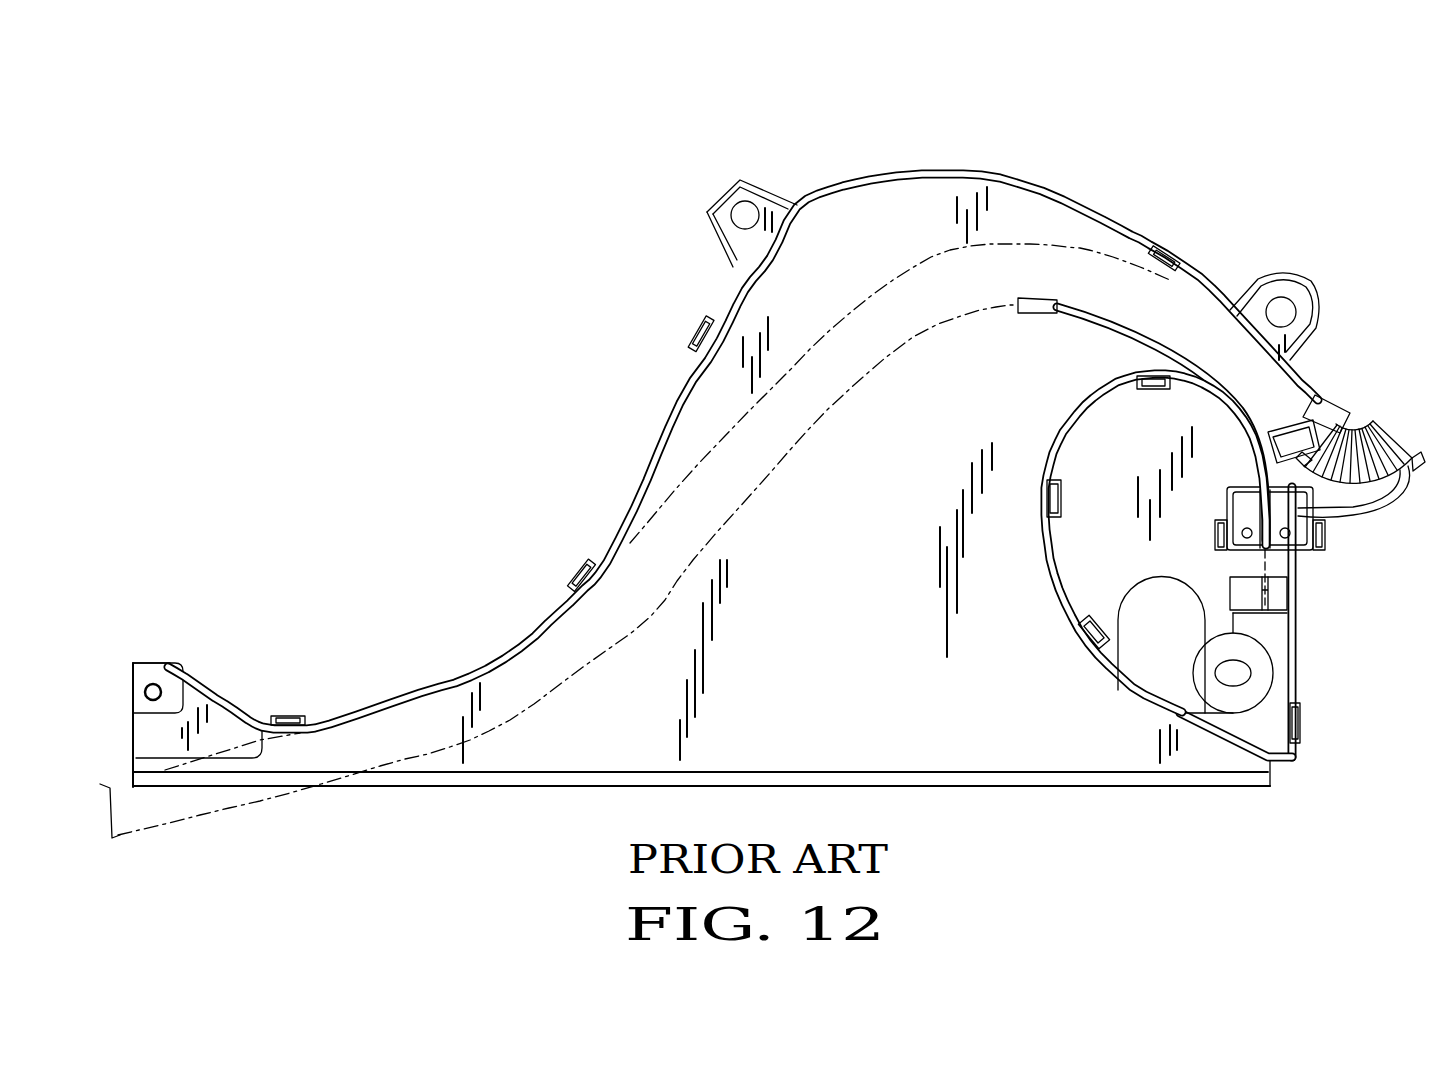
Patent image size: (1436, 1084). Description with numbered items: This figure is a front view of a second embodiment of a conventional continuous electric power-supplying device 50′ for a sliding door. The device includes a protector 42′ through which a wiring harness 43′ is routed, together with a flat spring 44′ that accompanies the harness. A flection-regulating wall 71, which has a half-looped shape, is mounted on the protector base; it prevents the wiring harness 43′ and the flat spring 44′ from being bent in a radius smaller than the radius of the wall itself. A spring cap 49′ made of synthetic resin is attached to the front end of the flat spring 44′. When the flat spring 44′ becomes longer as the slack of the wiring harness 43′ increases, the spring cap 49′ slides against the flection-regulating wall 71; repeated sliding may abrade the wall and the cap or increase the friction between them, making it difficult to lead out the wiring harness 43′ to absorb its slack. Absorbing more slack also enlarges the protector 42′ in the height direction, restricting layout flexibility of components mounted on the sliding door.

The conventional electric power-supplying device 50′ is at (762, 446).
The protector 42′ is at (1067, 193).
The wiring harness 43′ is at (793, 447).
The flat spring 44′ is at (1107, 325).
The spring cap 49′ is at (1040, 313).
The flection-regulating wall 71 is at (1048, 577).